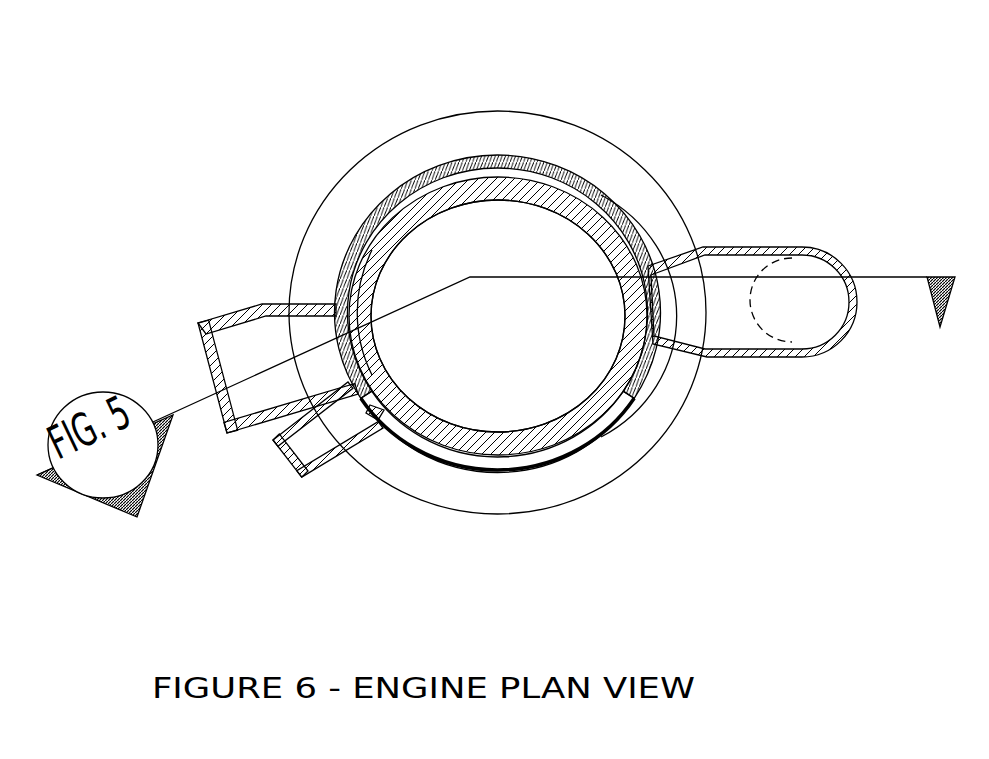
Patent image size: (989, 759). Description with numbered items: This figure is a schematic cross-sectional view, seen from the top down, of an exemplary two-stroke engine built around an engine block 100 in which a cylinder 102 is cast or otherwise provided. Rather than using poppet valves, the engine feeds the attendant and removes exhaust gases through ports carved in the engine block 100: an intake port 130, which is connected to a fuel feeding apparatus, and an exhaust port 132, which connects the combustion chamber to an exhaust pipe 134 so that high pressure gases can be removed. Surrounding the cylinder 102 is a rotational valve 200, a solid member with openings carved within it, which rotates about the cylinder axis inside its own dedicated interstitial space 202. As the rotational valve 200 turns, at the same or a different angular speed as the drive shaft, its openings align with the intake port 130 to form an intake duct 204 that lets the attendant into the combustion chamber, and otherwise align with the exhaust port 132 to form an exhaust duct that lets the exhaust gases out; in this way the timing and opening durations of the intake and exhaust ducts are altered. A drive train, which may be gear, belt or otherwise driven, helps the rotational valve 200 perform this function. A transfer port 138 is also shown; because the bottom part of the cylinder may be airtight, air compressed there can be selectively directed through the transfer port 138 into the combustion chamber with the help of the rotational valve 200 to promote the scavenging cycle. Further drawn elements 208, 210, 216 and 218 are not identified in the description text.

The engine block 100 is at (663, 187).
The cylinder 102 is at (518, 238).
The intake port 130 is at (357, 347).
The exhaust port 132 is at (637, 308).
The exhaust pipe 134 is at (786, 298).
The transfer port 138 is at (257, 330).
The rotational valve 200 is at (347, 230).
The interstitial space 202 is at (652, 246).
The intake duct 204 is at (667, 393).
The port insert 208 is at (360, 422).
The exhaust port flange 210 is at (340, 396).
The housing ring 216 is at (455, 162).
The seal band 218 is at (608, 433).